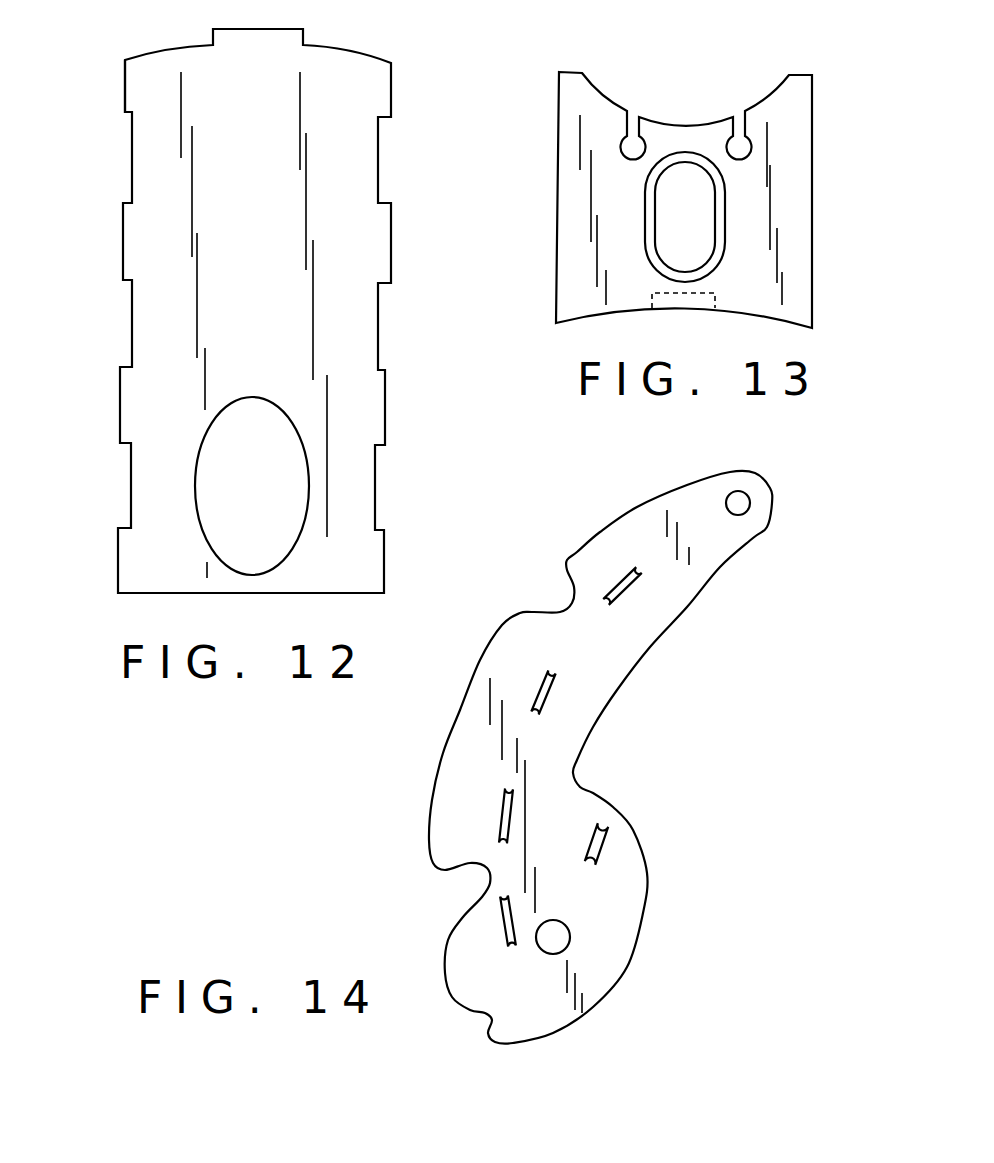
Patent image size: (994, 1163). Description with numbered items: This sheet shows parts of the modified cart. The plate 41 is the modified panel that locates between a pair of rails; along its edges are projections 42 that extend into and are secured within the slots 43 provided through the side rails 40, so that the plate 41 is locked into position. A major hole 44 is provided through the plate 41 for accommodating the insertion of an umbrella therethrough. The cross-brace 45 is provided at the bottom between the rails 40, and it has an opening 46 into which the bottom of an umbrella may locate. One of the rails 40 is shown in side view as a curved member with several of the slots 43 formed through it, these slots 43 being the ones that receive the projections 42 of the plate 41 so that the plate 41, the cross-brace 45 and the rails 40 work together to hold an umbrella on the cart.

In FIG. 14, the rail 40 is at (610, 698).
In FIG. 12, the plate 41 is at (352, 323).
In FIG. 12, the projections 42 is at (130, 230).
In FIG. 14, the slots 43 is at (641, 580).
In FIG. 12, the major hole 44 is at (197, 483).
In FIG. 13, the cross-brace 45 is at (813, 210).
In FIG. 13, the opening 46 is at (660, 217).